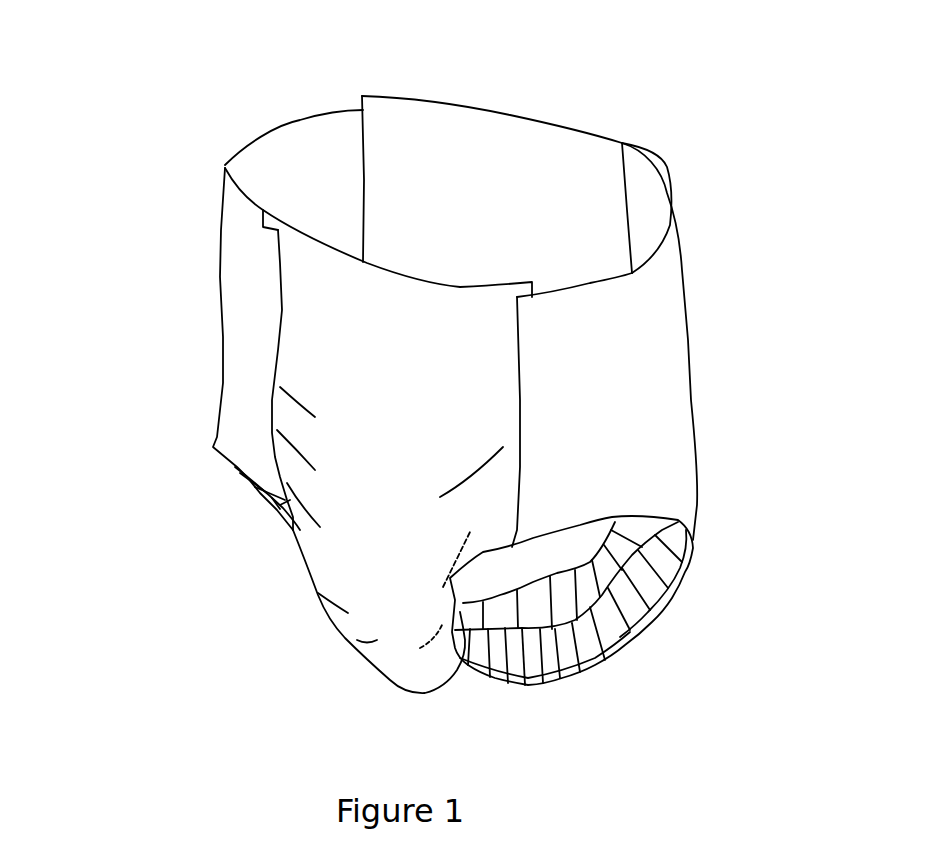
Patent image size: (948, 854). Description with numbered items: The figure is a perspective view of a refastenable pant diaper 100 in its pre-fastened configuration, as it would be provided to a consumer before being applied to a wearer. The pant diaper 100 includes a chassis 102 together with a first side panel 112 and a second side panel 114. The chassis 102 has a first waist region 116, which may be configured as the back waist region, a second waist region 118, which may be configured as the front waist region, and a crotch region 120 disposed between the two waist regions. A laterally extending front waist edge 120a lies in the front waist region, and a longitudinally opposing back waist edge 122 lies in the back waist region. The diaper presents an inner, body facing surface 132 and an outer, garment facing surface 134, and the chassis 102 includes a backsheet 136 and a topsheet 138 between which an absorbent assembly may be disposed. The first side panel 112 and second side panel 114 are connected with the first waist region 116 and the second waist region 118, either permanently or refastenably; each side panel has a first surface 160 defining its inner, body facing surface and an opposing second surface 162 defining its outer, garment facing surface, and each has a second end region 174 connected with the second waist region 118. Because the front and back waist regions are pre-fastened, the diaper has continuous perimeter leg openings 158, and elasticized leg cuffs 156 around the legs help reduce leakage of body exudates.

The pant diaper 100 is at (741, 332).
The chassis 102 is at (380, 593).
The first side panel 112 is at (667, 418).
The second side panel 114 is at (227, 230).
The first waist region 116 is at (530, 168).
The second waist region 118 is at (303, 330).
The crotch region 120 is at (405, 657).
The front waist edge 120a is at (305, 228).
The back waist edge 122 is at (580, 135).
The inner, body facing surface 132 is at (605, 206).
The outer, garment facing surface 134 is at (367, 443).
The backsheet 136 is at (390, 505).
The topsheet 138 is at (417, 187).
The elasticized leg cuffs 156 is at (573, 650).
The leg openings 158 is at (267, 493).
The first surface 160 is at (307, 156).
The second surface 162 is at (242, 280).
The second end region 174 is at (267, 305).